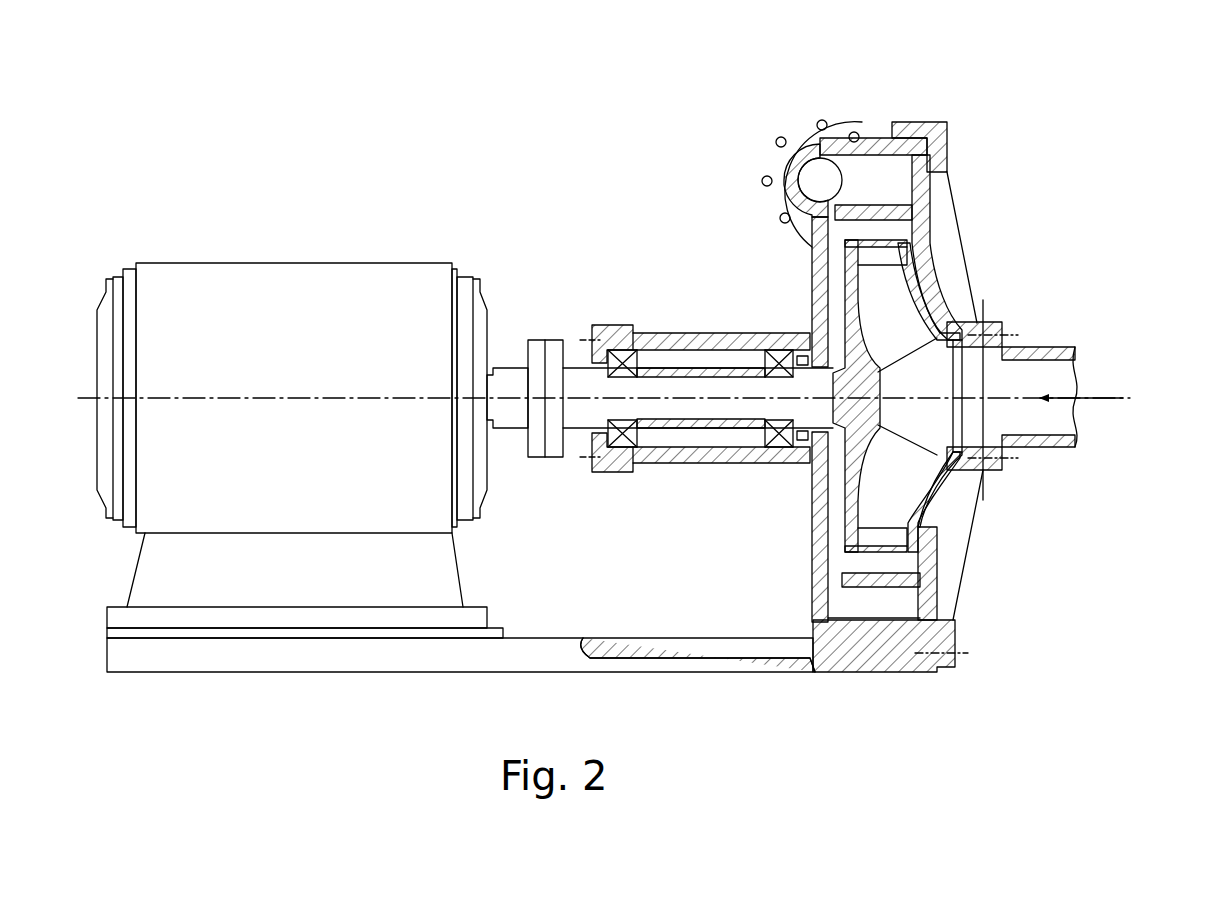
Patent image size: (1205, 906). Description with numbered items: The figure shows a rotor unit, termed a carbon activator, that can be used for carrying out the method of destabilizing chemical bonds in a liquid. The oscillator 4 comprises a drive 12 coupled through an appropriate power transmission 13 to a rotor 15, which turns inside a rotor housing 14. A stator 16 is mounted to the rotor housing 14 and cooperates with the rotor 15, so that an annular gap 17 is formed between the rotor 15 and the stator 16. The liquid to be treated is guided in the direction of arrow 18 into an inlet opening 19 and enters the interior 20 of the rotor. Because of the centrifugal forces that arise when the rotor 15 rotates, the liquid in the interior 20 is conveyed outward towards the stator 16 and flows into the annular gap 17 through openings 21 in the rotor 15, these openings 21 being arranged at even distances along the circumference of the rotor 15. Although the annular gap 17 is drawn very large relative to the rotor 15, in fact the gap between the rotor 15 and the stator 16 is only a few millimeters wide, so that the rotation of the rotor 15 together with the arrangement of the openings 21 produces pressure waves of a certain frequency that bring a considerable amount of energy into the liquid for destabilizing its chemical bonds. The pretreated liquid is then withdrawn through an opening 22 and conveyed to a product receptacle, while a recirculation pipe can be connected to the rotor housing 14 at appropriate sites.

The oscillator 4 is at (425, 112).
The drive 12 is at (233, 302).
The power transmission 13 is at (583, 363).
The rotor housing 14 is at (920, 195).
The rotor 15 is at (910, 302).
The stator 16 is at (900, 227).
The annular gap 17 is at (872, 561).
The arrow 18 is at (1090, 400).
The inlet opening 19 is at (1045, 378).
The interior of the rotor 20 is at (1002, 468).
The openings 21 is at (880, 247).
The opening 22 is at (820, 183).